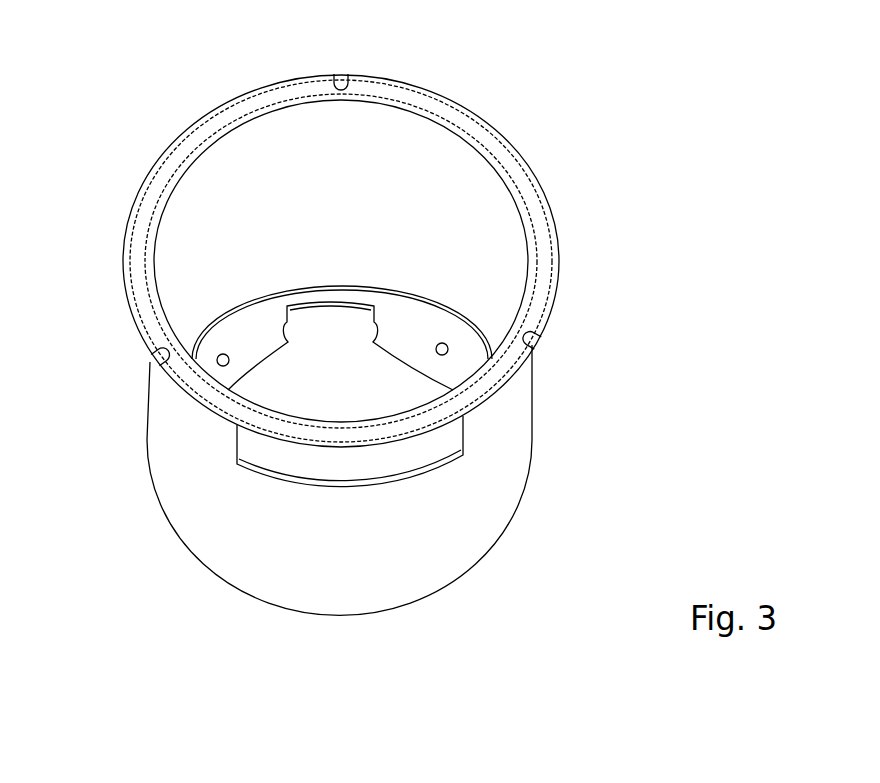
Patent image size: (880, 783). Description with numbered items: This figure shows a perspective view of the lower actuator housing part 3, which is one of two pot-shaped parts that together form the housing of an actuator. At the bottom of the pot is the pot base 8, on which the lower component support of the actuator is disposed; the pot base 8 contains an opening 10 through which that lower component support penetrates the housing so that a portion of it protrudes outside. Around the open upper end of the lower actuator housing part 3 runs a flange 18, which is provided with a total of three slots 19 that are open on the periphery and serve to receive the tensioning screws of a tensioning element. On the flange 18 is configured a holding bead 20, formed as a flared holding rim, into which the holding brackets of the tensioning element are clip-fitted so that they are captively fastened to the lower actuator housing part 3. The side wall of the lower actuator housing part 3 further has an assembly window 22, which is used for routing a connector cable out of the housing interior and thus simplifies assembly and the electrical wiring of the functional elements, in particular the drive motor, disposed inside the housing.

The lower actuator housing part 3 is at (510, 446).
The pot base 8 is at (256, 330).
The opening 10 is at (342, 362).
The flange 18 is at (184, 141).
The slot 19 is at (328, 74).
The holding bead 20 is at (556, 255).
The assembly window 22 is at (257, 452).